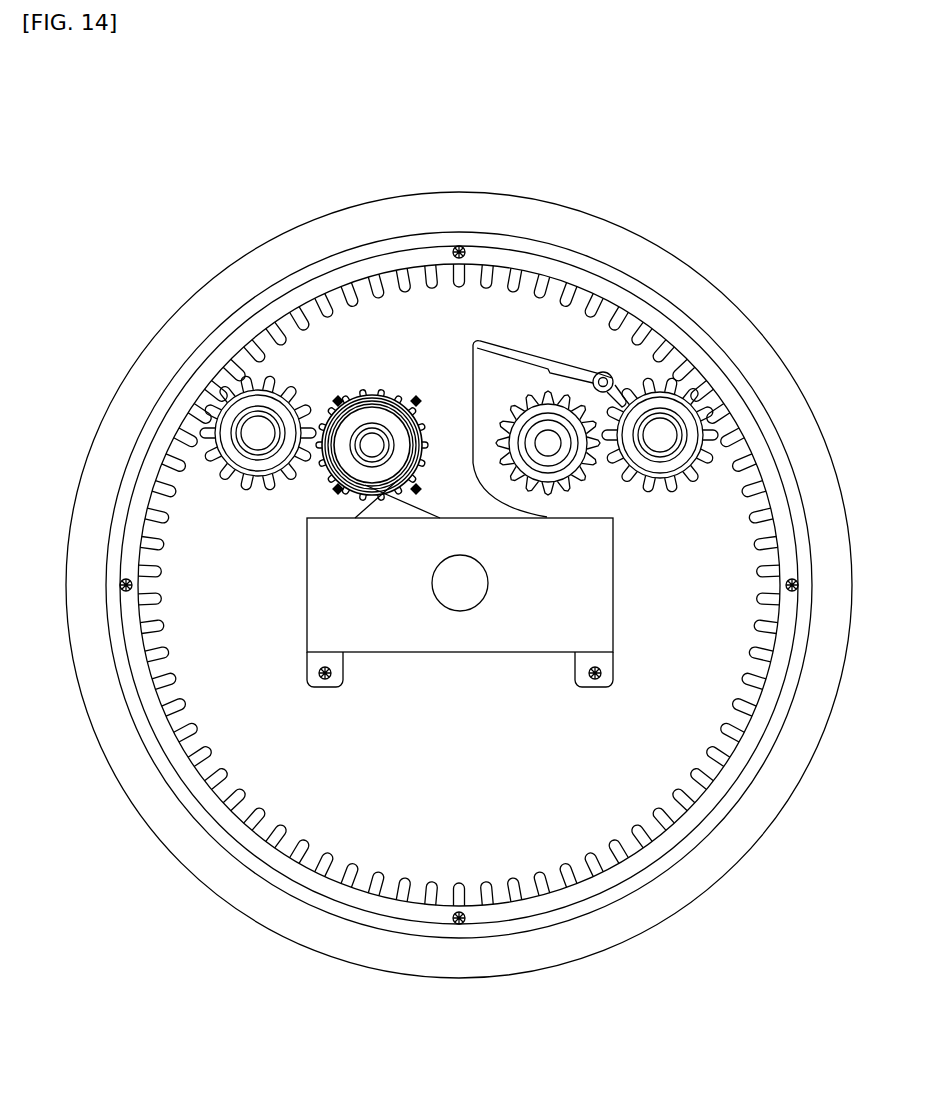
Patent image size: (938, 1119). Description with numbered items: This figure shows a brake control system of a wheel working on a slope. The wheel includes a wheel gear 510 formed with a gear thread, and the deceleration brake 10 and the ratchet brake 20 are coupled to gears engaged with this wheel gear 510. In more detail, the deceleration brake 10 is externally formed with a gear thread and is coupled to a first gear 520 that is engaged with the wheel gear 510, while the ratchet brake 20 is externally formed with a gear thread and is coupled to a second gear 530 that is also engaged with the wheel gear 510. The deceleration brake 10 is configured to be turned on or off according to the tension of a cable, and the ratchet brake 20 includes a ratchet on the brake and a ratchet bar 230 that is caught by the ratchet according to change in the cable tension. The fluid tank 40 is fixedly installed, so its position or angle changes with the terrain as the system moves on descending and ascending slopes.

The wheel gear 510 is at (530, 263).
The first gear 520 is at (256, 390).
The second gear 530 is at (693, 404).
The deceleration brake 10 is at (372, 415).
The ratchet brake 20 is at (575, 457).
The ratchet bar 230 is at (531, 352).
The fluid tank 40 is at (463, 643).